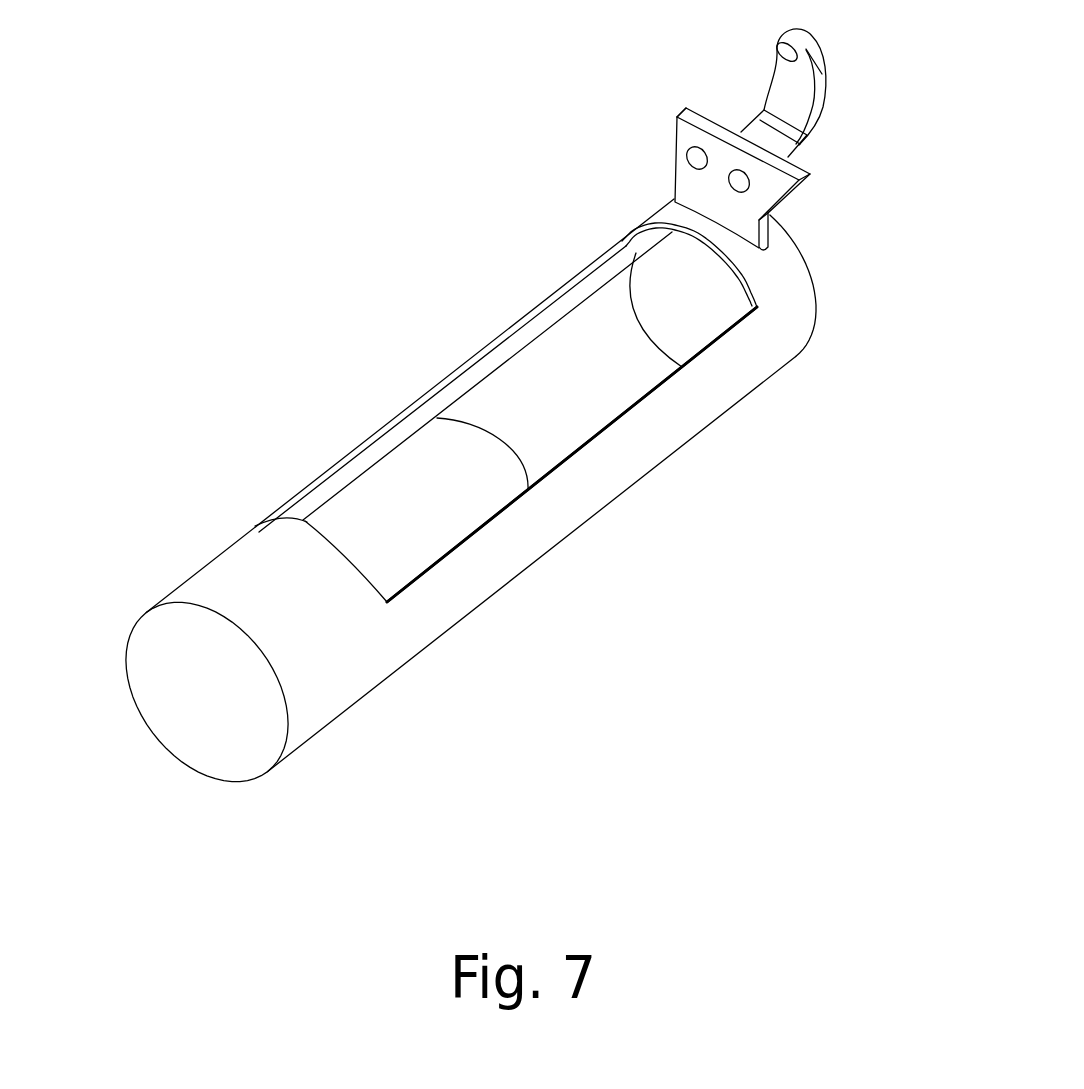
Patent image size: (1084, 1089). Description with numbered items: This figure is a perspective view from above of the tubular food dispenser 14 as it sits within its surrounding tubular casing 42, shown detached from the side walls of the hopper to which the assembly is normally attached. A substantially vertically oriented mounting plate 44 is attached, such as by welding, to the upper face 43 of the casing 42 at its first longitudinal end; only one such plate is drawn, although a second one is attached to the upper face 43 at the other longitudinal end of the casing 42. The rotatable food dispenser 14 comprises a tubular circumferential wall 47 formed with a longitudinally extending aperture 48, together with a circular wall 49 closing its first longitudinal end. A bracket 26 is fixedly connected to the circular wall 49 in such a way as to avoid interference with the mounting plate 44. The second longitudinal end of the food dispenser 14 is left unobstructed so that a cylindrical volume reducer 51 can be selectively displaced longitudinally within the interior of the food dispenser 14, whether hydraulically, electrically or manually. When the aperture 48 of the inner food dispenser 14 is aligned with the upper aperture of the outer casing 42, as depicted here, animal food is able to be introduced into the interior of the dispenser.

The tubular food dispenser 14 is at (688, 308).
The bracket 26 is at (822, 84).
The tubular casing 42 is at (197, 572).
The upper face 43 is at (747, 262).
The mounting plate 44 is at (775, 194).
The tubular circumferential wall 47 is at (417, 428).
The longitudinally extending aperture 48 is at (547, 395).
The circular wall 49 is at (708, 335).
The cylindrical volume reducer 51 is at (407, 555).